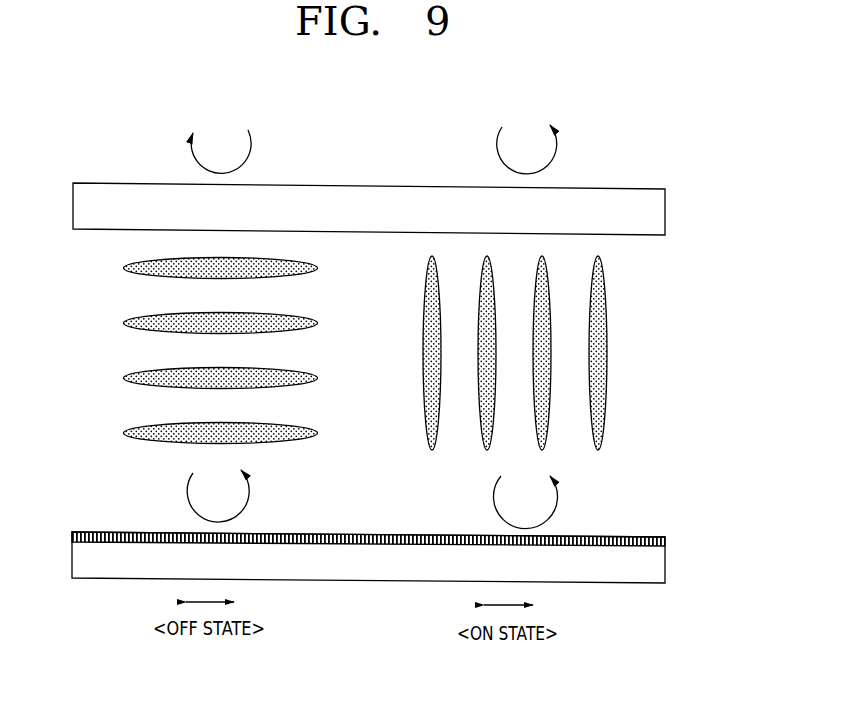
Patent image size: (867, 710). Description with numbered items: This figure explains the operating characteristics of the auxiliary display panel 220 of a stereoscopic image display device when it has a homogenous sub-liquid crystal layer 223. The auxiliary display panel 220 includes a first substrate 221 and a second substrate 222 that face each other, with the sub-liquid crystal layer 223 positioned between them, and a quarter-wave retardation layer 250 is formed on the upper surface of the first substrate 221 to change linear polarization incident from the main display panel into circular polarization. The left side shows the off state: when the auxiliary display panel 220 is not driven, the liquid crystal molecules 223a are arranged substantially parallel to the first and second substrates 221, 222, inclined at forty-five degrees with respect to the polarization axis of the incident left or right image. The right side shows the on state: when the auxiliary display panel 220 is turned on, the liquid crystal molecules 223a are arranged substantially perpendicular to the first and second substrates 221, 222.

The auxiliary display panel 220 is at (668, 160).
The first substrate 221 is at (655, 570).
The second substrate 222 is at (653, 210).
The sub-liquid crystal layer 223 is at (417, 443).
The liquid crystal molecules 223a is at (600, 449).
The λ/4 retardation layer 250 is at (667, 541).